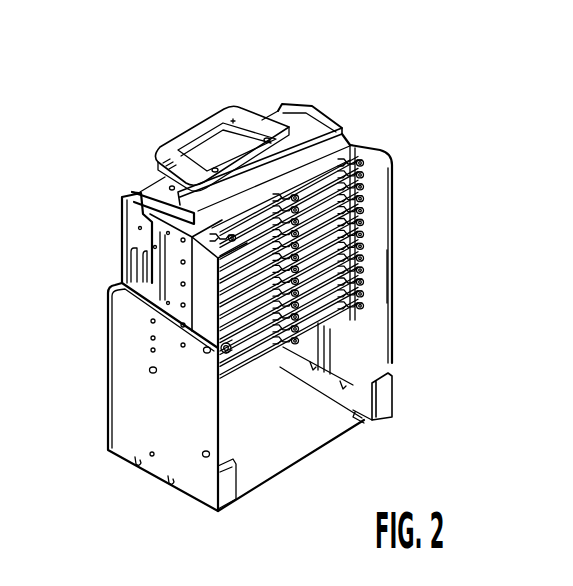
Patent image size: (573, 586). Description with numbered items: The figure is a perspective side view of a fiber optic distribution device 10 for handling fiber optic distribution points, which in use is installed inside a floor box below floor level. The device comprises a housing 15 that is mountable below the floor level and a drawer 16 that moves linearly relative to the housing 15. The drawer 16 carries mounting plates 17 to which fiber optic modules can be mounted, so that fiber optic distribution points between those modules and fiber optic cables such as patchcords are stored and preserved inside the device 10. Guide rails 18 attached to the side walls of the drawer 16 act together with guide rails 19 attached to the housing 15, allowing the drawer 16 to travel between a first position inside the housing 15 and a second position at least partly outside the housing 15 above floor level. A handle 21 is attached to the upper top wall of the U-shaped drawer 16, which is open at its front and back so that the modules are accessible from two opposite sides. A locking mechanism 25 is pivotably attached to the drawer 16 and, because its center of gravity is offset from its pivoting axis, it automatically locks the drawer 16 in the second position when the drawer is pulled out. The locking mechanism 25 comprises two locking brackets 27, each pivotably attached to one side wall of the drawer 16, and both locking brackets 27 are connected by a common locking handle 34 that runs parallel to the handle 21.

The fiber optic distribution device 10 is at (437, 168).
The housing 15 is at (182, 466).
The drawer 16 is at (146, 180).
The mounting plates 17 is at (363, 297).
The guide rails 18 is at (162, 290).
The guide rails 19 is at (328, 354).
The handle 21 is at (223, 117).
The locking mechanism 25 is at (334, 104).
The locking bracket 27 is at (126, 226).
The locking handle 34 is at (313, 152).